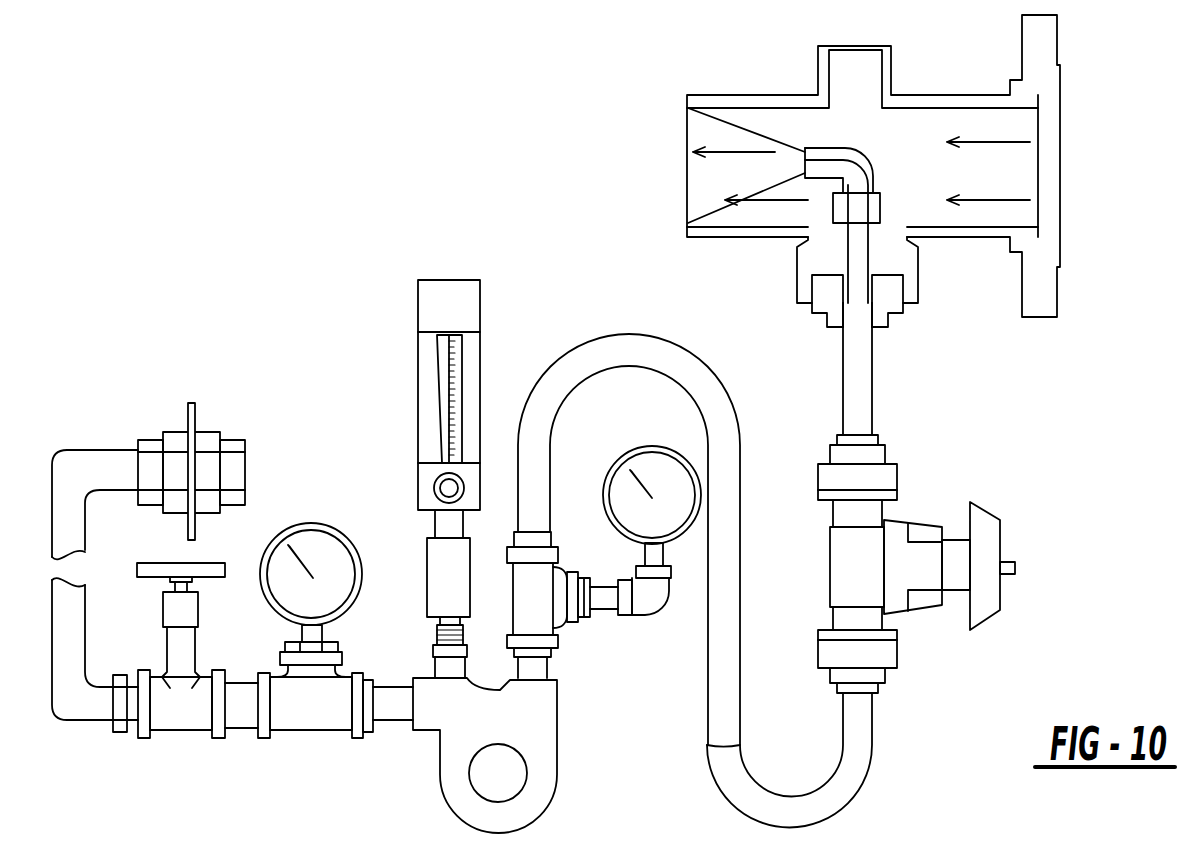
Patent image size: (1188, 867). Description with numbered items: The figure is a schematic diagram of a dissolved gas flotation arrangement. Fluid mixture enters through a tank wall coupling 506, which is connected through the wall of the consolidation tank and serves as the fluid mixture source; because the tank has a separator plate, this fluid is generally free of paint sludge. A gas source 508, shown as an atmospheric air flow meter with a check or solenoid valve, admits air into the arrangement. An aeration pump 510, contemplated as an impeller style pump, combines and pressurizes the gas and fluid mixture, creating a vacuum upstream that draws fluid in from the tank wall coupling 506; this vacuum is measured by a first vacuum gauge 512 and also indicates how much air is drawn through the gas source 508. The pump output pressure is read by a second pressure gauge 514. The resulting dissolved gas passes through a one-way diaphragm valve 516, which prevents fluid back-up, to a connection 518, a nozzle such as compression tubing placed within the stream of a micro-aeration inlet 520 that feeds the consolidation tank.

The tank wall coupling 506 is at (205, 433).
The gas source 508 is at (466, 303).
The aeration pump 510 is at (543, 813).
The first vacuum gauge 512 is at (327, 546).
The second pressure gauge 514 is at (618, 493).
The diaphragm valve 516 is at (898, 538).
The connection 518 is at (876, 165).
The micro-aeration inlet 520 is at (995, 94).